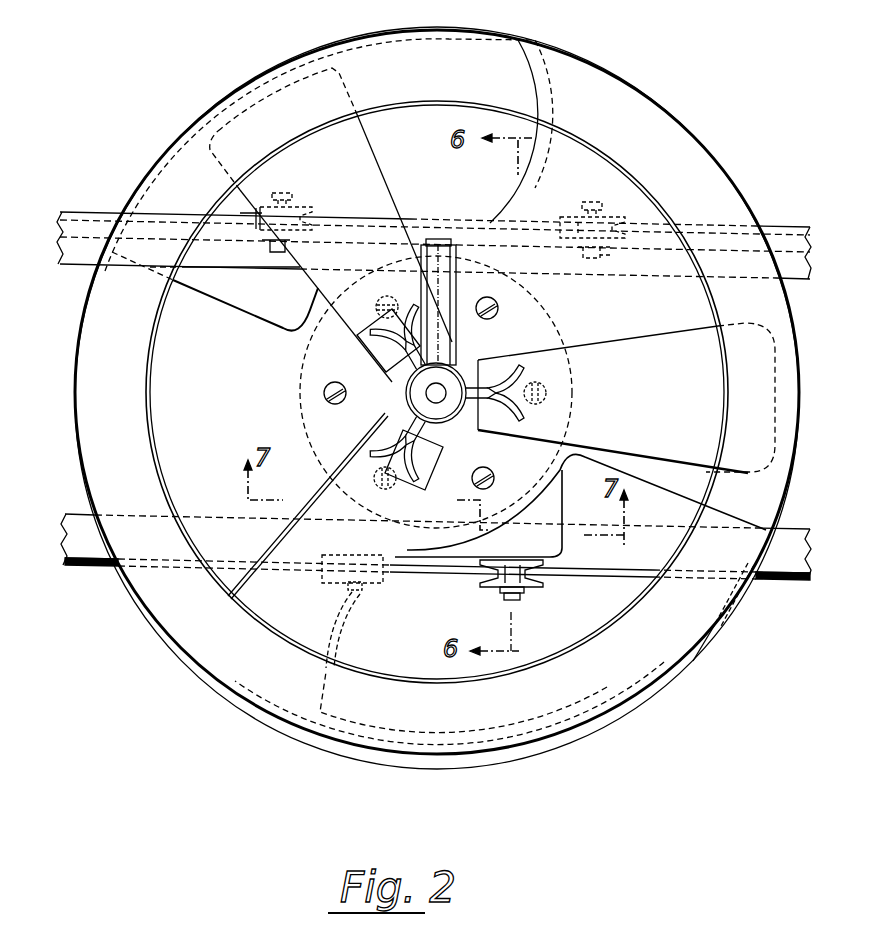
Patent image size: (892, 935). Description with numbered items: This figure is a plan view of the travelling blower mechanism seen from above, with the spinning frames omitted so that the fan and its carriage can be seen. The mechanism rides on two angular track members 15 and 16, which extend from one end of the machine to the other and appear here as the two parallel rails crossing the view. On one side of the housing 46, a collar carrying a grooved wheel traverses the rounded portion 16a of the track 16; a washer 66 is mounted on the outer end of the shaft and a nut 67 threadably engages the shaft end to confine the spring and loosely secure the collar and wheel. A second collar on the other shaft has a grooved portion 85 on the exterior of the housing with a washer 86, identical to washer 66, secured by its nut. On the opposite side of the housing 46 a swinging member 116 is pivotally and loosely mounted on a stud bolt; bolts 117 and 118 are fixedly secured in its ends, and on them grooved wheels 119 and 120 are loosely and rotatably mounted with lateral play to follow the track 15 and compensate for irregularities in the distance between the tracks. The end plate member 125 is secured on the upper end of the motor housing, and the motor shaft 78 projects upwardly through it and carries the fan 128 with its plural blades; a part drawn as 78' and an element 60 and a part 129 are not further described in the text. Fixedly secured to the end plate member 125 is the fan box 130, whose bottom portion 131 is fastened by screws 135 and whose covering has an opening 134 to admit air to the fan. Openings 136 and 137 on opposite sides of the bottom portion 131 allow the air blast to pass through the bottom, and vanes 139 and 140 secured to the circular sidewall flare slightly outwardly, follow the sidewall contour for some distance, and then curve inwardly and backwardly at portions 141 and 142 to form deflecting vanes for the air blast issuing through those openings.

The angular track member 15 is at (96, 214).
The angular track member 16 is at (96, 555).
The rounded portion of track 16a is at (88, 568).
The housing 46 is at (558, 508).
The pulley 60 is at (483, 579).
The washer 66 is at (503, 594).
The nut 67 is at (522, 596).
The motor shaft 78 is at (454, 417).
The guide hook 78' is at (348, 630).
The grooved portion 85 is at (322, 574).
The washer 86 is at (346, 588).
The swinging member 116 is at (560, 242).
The bolt 117 is at (276, 251).
The bolt 118 is at (605, 260).
The grooved wheel 119 is at (298, 200).
The grooved wheel 120 is at (604, 214).
The end plate member of motor housing 125 is at (301, 362).
The fan 128 is at (406, 395).
The paddle plate 129 is at (660, 328).
The fan box 130 is at (362, 158).
The bottom portion of fan box 131 is at (278, 553).
The opening 134 is at (590, 620).
The screws 135 is at (540, 384).
The opening 136 is at (529, 631).
The opening 137 is at (498, 131).
The vane 139 is at (392, 760).
The vane 140 is at (508, 16).
The inwardly and backwardly curving portion 141 is at (338, 699).
The inwardly and backwardly curving portion 142 is at (548, 104).